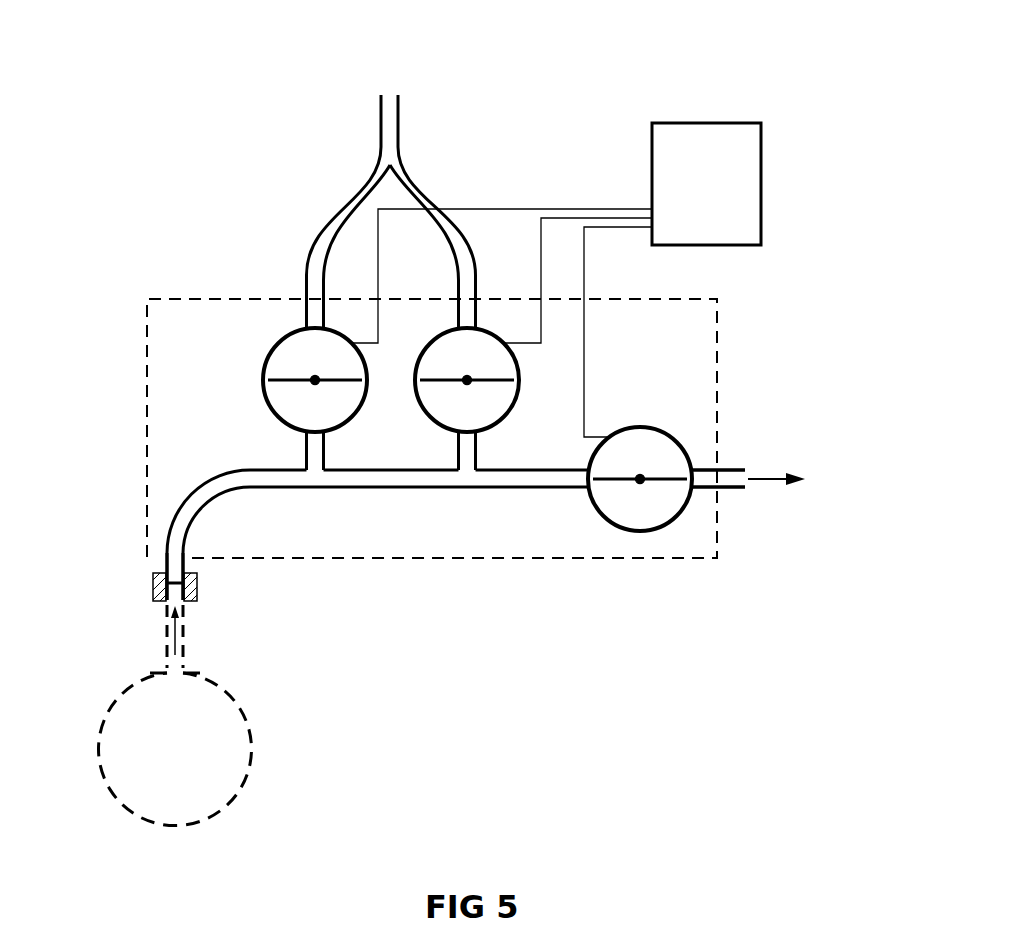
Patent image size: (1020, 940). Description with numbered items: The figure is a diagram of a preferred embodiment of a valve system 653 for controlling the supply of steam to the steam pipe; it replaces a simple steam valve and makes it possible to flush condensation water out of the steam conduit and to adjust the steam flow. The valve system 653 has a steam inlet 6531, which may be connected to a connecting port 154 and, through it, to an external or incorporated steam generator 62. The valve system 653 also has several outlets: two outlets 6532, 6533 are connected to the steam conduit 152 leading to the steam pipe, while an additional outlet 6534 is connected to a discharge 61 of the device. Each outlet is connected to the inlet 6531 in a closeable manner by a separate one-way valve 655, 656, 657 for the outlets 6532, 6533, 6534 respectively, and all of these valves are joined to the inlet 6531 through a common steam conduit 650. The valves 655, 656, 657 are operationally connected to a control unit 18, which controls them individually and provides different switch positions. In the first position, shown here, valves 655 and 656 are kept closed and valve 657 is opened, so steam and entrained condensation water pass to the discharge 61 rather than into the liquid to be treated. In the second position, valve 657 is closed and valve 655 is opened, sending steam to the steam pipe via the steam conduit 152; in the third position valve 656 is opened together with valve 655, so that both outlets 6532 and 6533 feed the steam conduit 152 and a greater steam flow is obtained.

The control unit 18 is at (723, 193).
The discharge 61 is at (752, 490).
The steam generator 62 is at (250, 728).
The steam conduit 152 is at (399, 114).
The connecting port 154 is at (153, 587).
The common steam conduit 650 is at (442, 490).
The valve system 653 is at (146, 324).
The valve 655 is at (267, 403).
The valve 656 is at (422, 407).
The valve 657 is at (667, 523).
The steam inlet 6531 is at (187, 558).
The outlet 6532 is at (305, 297).
The outlet 6533 is at (457, 297).
The additional outlet 6534 is at (717, 467).